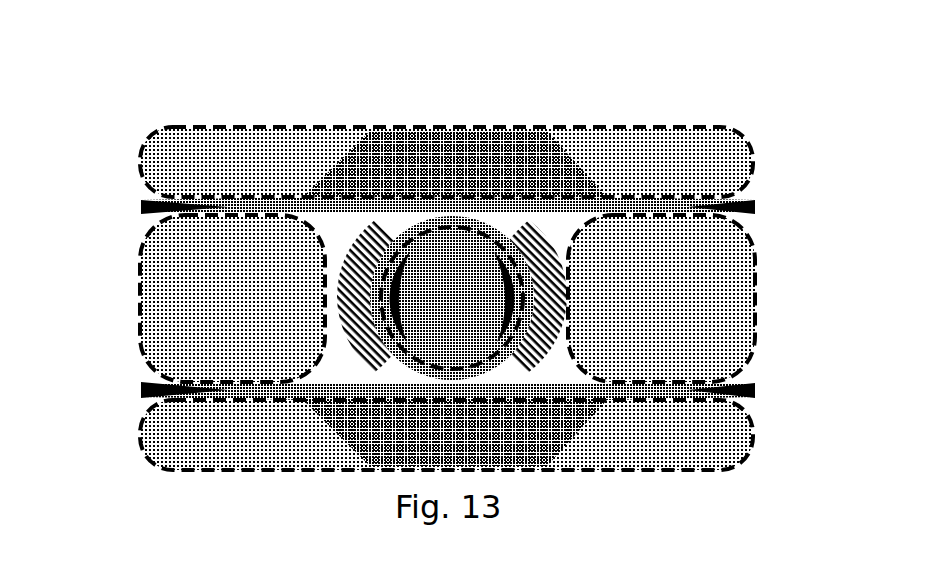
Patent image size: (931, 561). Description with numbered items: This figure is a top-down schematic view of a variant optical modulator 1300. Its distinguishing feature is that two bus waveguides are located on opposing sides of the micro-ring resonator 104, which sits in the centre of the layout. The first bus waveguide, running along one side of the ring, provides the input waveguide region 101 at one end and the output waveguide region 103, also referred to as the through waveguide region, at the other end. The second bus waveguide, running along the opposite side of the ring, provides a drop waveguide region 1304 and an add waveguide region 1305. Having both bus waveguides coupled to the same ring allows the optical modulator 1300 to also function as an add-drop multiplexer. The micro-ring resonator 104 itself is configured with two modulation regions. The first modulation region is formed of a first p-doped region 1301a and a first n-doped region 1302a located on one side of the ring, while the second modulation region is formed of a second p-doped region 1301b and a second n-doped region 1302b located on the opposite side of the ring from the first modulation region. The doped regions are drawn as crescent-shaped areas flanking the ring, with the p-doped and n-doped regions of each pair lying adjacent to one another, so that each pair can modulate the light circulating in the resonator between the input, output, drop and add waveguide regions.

The variant optical modulator 1300 is at (434, 235).
The input waveguide region 101 is at (143, 205).
The output waveguide region 103 is at (752, 200).
The micro-ring resonator 104 is at (507, 243).
The first p-doped region 1301a is at (363, 245).
The second p-doped region 1301b is at (496, 255).
The first n-doped region 1302a is at (410, 262).
The second n-doped region 1302b is at (540, 235).
The drop waveguide region 1304 is at (142, 388).
The add waveguide region 1305 is at (753, 385).